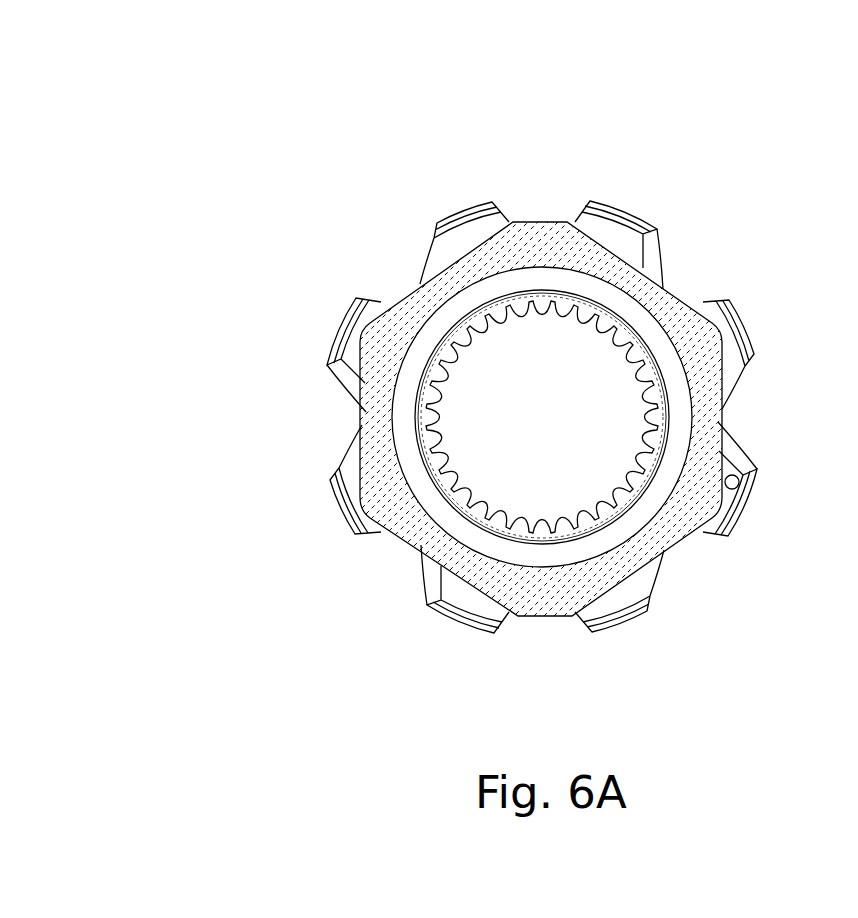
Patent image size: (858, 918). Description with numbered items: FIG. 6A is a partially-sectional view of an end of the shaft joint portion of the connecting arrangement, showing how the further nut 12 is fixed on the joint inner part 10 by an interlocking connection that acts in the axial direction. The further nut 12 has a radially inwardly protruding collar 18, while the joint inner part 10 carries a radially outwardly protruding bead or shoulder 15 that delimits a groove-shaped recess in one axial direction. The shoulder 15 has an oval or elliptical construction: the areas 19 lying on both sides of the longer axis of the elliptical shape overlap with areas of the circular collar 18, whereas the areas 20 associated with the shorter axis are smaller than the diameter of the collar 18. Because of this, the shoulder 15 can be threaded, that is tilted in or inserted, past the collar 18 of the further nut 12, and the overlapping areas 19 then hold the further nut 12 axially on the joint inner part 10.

The joint inner part 10 is at (635, 476).
The further nut 12 is at (702, 370).
The shoulder 15 is at (602, 297).
The collar 18 is at (652, 405).
The areas 19 is at (535, 288).
The areas 20 is at (662, 427).